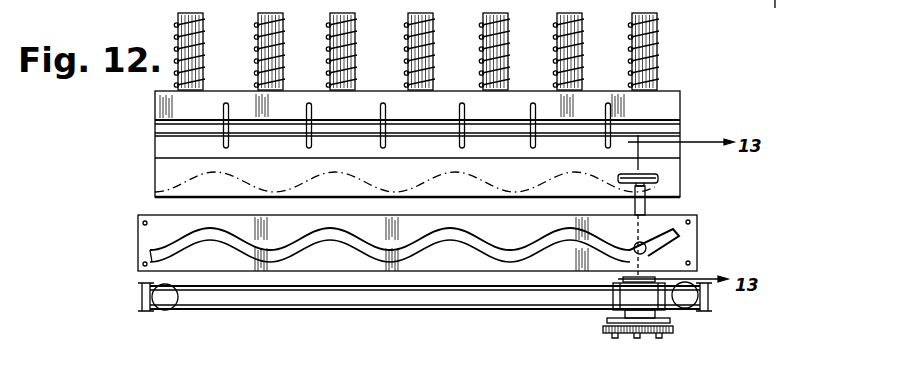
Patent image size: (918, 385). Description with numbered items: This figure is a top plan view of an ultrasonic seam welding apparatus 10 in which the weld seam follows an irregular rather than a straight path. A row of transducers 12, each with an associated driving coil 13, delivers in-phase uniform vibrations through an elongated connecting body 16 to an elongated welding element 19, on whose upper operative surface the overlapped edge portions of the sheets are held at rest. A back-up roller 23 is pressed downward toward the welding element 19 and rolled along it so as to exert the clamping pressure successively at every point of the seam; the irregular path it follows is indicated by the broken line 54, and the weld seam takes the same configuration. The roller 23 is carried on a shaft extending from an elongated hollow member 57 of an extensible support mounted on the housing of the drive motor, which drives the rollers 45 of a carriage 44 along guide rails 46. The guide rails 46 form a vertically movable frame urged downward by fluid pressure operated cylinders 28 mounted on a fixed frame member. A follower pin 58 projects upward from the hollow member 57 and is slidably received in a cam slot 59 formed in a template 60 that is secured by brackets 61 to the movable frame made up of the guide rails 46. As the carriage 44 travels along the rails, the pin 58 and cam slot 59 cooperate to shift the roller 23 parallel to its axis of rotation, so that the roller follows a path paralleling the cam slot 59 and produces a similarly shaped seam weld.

The ultrasonic seam welding apparatus 10 is at (668, 42).
The transducer 12 is at (262, 13).
The driving coil 13 is at (258, 38).
The connecting body 16 is at (155, 121).
The welding element 19 is at (157, 165).
The back-up roller 23 is at (650, 174).
The fluid pressure operated cylinder 28 is at (716, 327).
The carriage 44 is at (672, 330).
The carriage roller 45 is at (613, 293).
The guide rail 46 is at (345, 300).
The broken line 54 is at (165, 182).
The elongated hollow member 57 is at (648, 208).
The follower pin 58 is at (671, 253).
The cam slot 59 is at (636, 242).
The template 60 is at (697, 217).
The bracket 61 is at (145, 280).